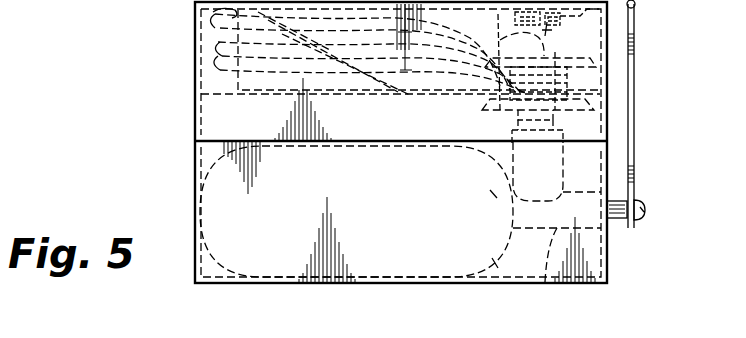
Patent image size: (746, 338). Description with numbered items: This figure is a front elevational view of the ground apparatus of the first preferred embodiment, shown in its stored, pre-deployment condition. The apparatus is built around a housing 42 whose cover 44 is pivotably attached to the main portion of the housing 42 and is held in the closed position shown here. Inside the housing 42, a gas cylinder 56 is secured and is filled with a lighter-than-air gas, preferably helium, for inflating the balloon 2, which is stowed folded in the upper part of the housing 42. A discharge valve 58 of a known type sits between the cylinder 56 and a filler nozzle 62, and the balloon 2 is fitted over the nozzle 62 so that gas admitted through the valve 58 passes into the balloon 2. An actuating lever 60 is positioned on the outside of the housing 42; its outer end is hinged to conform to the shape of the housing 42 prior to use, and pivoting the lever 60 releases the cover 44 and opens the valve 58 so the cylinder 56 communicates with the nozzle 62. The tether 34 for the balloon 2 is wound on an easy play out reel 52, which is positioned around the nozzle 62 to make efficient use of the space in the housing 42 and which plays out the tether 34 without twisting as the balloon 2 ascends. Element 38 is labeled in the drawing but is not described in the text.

The balloon 2 is at (196, 44).
The hose connector 38 is at (136, 5).
The cover 44 is at (196, 118).
The housing 42 is at (195, 168).
The tether 34 is at (590, 95).
The reel 52 is at (600, 52).
The filler nozzle 62 is at (600, 42).
The gas cylinder 56 is at (498, 280).
The discharge valve 58 is at (545, 285).
The actuating lever 60 is at (636, 186).